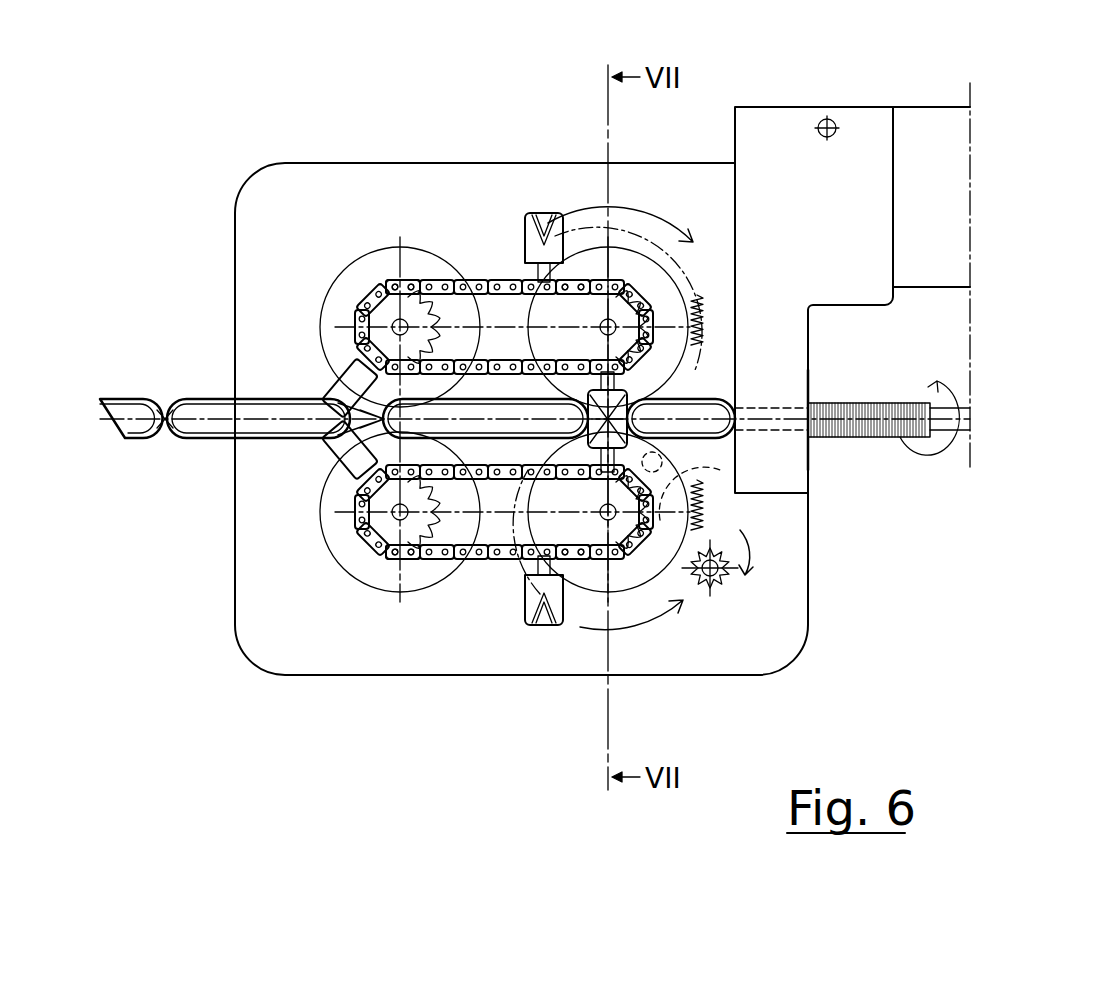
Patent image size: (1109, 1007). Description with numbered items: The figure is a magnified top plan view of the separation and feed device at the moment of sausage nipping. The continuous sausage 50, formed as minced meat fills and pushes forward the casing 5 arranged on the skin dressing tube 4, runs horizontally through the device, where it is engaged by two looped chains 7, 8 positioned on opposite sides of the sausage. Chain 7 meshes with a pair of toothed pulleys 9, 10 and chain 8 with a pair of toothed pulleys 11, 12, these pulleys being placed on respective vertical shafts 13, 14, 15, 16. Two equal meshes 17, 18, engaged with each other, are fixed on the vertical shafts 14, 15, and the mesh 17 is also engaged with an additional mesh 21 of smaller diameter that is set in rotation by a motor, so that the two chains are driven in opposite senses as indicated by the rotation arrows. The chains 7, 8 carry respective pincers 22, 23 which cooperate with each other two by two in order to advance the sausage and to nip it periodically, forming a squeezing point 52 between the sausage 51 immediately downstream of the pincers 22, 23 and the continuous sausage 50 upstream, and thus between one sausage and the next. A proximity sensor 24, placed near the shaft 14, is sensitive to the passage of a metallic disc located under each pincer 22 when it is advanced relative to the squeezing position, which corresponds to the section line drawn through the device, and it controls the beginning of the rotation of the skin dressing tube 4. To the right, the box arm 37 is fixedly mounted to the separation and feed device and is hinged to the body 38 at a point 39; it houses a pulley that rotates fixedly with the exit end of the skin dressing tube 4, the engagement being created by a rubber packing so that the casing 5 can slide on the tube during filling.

The skin dressing tube 4 is at (950, 440).
The gathered casing 5 is at (855, 440).
The chain 7 is at (450, 552).
The chain 8 is at (448, 280).
The toothed pulley 9 is at (392, 506).
The toothed pulley 10 is at (598, 560).
The toothed pulley 11 is at (592, 275).
The toothed pulley 12 is at (400, 278).
The vertical shaft 13 is at (385, 548).
The vertical shaft 14 is at (612, 522).
The vertical shaft 15 is at (612, 305).
The vertical shaft 16 is at (393, 317).
The mesh 17 is at (714, 578).
The mesh 18 is at (693, 300).
The additional mesh 21 is at (725, 580).
The pincer 22 is at (520, 598).
The pincer 23 is at (530, 240).
The proximity sensor 24 is at (726, 517).
The box arm 37 is at (770, 125).
The body 38 is at (935, 125).
The hinge point 39 is at (832, 122).
The continuous sausage 50 is at (721, 392).
The sausage 51 is at (134, 390).
The squeezing point 52 is at (170, 412).